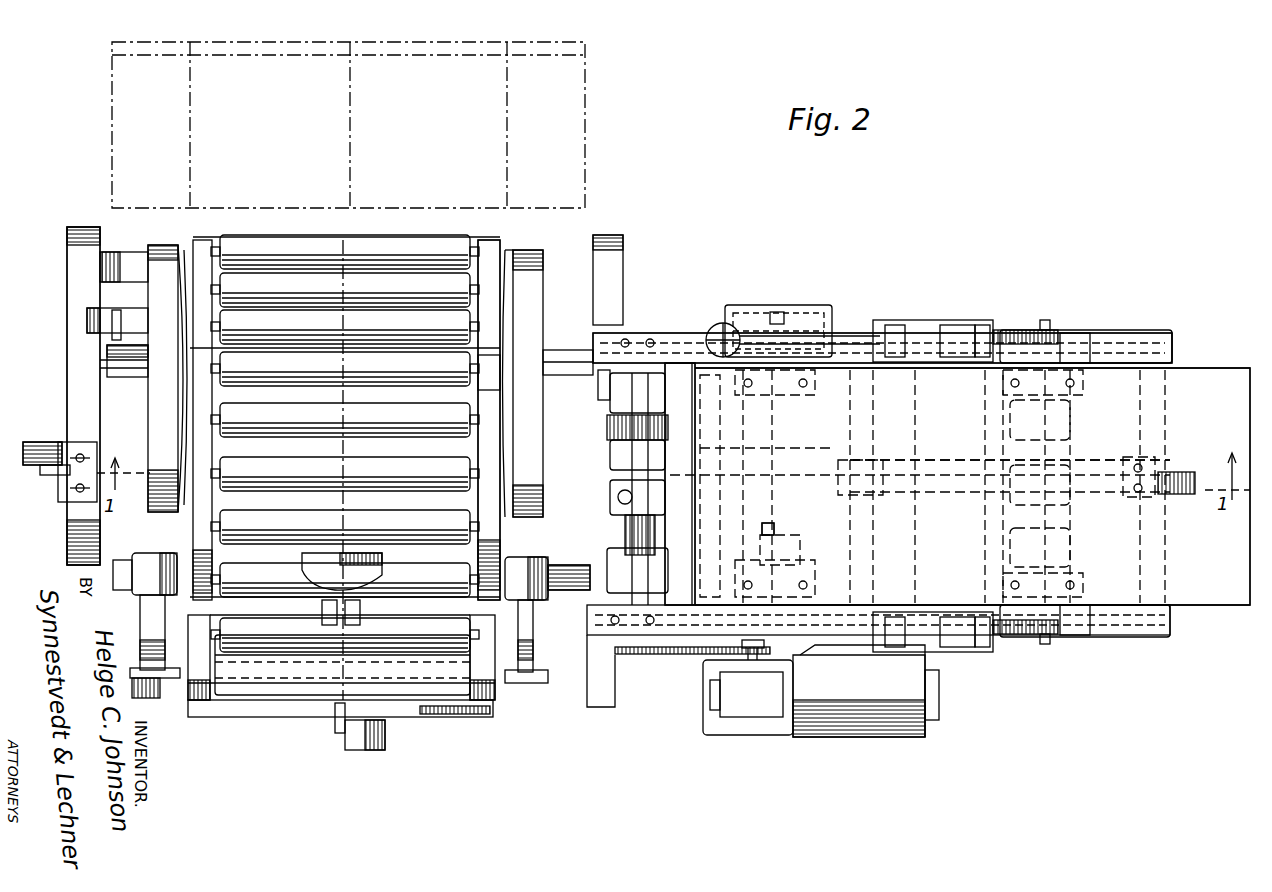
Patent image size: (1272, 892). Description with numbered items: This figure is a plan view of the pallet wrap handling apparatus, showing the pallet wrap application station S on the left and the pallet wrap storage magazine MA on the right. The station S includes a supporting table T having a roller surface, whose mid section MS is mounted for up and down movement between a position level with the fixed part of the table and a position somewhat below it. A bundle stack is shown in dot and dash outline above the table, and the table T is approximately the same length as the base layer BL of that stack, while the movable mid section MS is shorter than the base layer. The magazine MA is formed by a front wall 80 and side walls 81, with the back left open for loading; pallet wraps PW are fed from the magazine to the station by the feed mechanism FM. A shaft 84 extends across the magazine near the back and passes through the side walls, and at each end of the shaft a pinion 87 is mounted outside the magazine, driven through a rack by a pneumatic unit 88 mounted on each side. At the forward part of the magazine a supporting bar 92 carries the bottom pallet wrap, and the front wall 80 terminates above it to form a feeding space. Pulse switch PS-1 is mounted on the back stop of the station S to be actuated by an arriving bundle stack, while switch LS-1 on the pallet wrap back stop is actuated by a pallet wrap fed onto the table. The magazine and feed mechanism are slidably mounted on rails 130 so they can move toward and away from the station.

The pallet wrap application station S is at (165, 228).
The base layer BL is at (262, 240).
The supporting table T is at (482, 270).
The mid section MS is at (482, 383).
The front wall 80 is at (692, 395).
The pneumatic unit 88 is at (948, 330).
The pinion 87 is at (1052, 335).
The side walls 81 is at (1083, 360).
The rails 130 is at (1118, 333).
The pallet wrap storage magazine MA is at (1160, 322).
The pallet wrap PW is at (1205, 368).
The shaft 84 is at (1010, 452).
The supporting bar 92 is at (828, 488).
The feed mechanism FM is at (660, 655).
The pulse switch PS-1 is at (372, 730).
The switch LS-1 is at (38, 443).